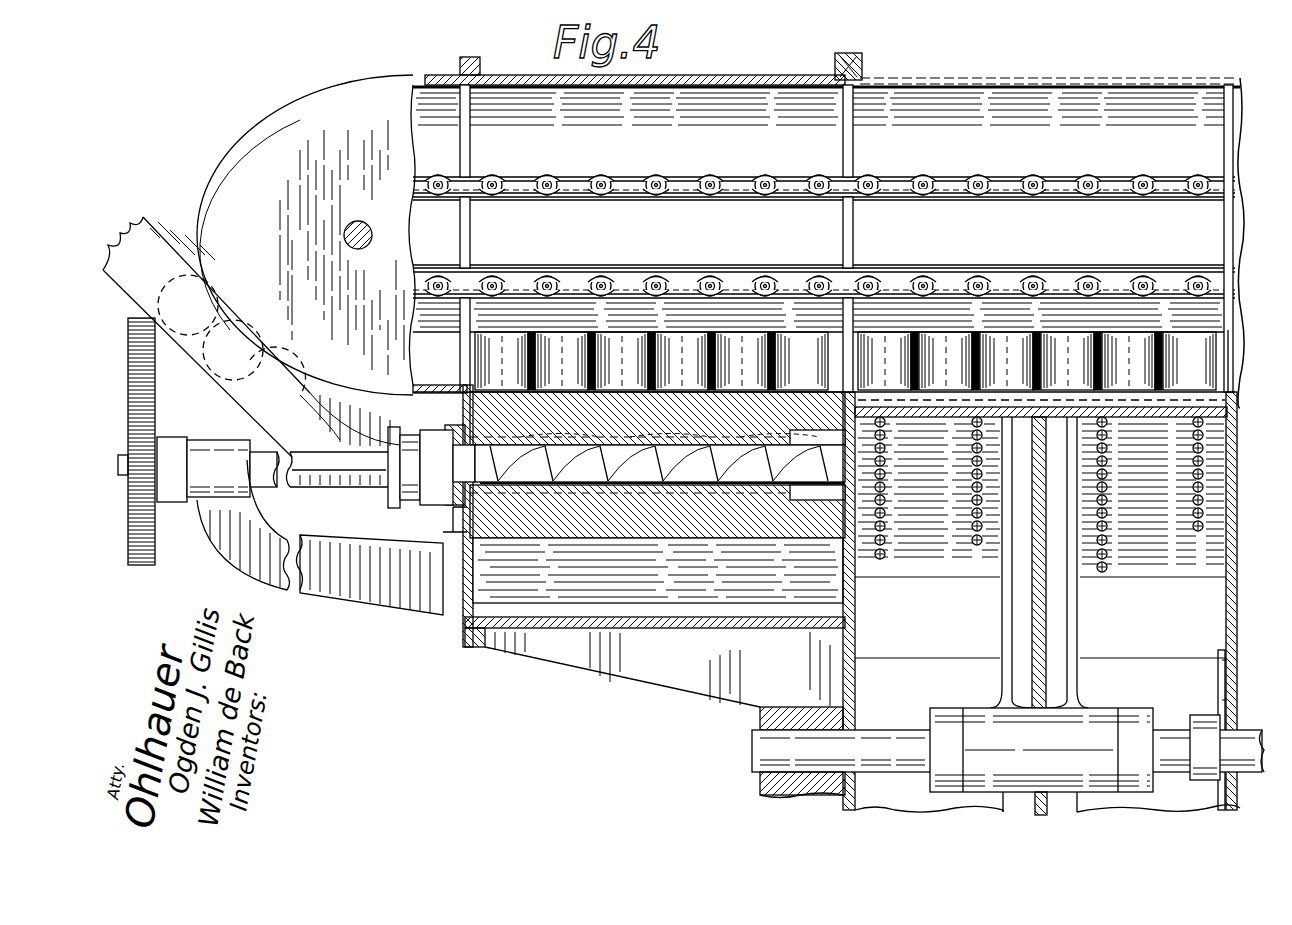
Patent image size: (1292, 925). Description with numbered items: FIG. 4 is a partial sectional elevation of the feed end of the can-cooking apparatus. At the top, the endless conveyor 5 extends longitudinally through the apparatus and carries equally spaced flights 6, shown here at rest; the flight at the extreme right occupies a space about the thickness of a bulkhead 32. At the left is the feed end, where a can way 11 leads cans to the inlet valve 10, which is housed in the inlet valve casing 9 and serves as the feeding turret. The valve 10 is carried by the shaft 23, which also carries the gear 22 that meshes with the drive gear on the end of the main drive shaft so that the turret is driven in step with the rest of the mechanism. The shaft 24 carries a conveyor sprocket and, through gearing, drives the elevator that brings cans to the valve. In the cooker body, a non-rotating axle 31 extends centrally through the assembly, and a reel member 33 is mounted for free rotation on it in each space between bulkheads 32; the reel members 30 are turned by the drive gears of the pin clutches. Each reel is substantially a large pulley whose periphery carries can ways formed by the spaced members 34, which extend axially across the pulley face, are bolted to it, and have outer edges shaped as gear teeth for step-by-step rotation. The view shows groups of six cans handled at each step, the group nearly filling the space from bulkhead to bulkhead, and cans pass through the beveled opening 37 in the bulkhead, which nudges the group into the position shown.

The endless conveyor 5 is at (677, 185).
The flights 6 is at (463, 147).
The inlet valve casing 9 is at (560, 618).
The inlet valve 10 is at (543, 523).
The can way 11 is at (148, 247).
The gear 22 is at (157, 545).
The shaft 23 is at (305, 475).
The shaft 24 is at (362, 222).
The reel members 30 is at (922, 427).
The axle 31 is at (868, 740).
The bulkheads 32 is at (1223, 606).
The reel member 33 is at (1017, 596).
The spaced members 34 is at (937, 320).
The opening 37 is at (1230, 380).